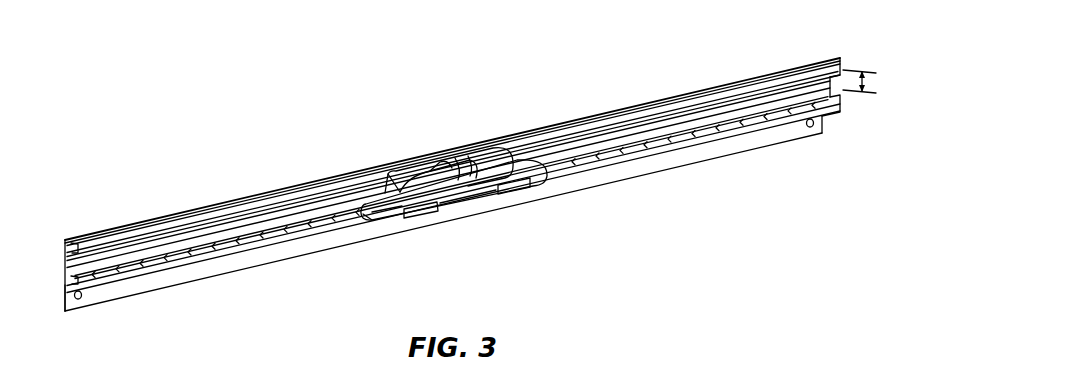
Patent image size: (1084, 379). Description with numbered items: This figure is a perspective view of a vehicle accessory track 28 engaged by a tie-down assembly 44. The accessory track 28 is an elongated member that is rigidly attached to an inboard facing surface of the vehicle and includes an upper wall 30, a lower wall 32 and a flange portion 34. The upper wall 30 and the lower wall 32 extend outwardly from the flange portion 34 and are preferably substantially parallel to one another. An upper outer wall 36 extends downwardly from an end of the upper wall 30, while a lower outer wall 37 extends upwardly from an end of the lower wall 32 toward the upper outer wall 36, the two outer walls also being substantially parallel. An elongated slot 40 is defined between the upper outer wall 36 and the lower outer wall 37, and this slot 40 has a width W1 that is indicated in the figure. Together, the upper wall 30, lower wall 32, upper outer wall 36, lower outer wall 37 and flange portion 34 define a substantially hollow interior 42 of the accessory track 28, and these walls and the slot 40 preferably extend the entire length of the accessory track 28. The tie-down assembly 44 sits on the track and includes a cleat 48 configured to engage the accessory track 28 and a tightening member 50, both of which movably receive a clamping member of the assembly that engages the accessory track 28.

The accessory track 28 is at (170, 207).
The upper wall 30 is at (243, 205).
The lower wall 32 is at (64, 296).
The flange portion 34 is at (210, 268).
The upper outer wall 36 is at (843, 68).
The lower outer wall 37 is at (843, 100).
The elongated slot 40 is at (78, 260).
The hollow interior 42 is at (310, 208).
The tie-down assembly 44 is at (490, 101).
The cleat 48 is at (533, 193).
The tightening member 50 is at (430, 167).
The width of slot W1 is at (867, 82).